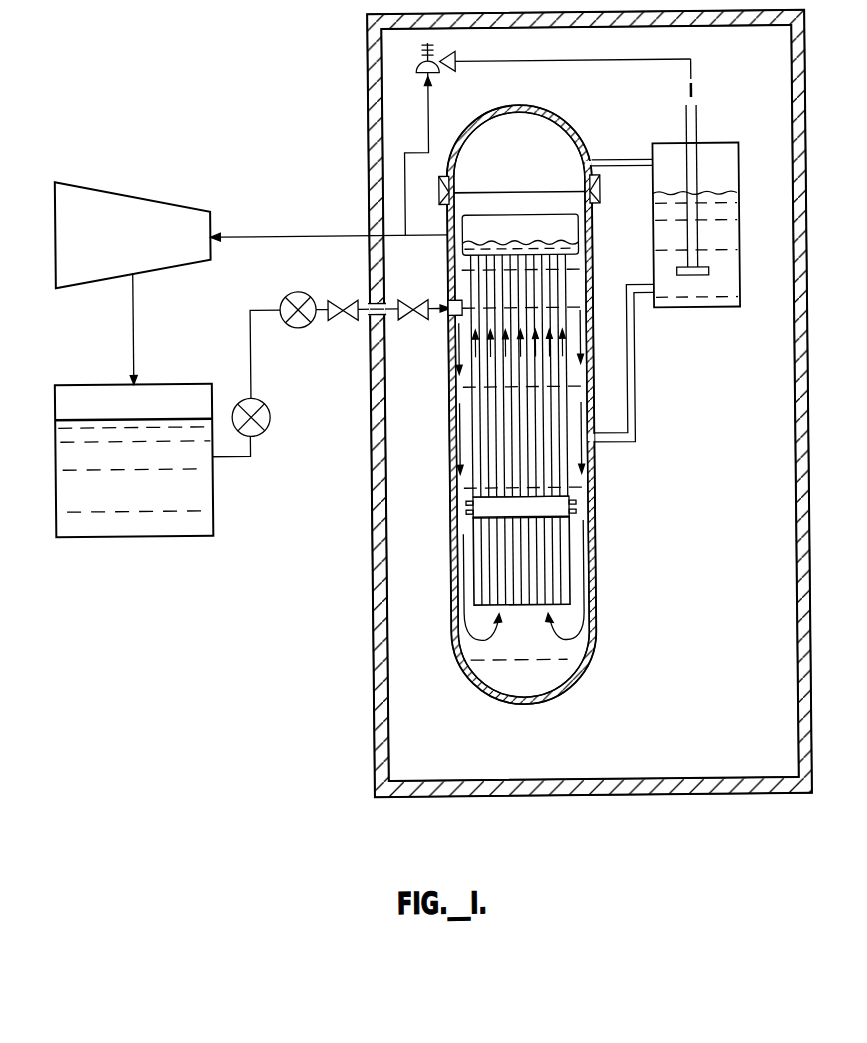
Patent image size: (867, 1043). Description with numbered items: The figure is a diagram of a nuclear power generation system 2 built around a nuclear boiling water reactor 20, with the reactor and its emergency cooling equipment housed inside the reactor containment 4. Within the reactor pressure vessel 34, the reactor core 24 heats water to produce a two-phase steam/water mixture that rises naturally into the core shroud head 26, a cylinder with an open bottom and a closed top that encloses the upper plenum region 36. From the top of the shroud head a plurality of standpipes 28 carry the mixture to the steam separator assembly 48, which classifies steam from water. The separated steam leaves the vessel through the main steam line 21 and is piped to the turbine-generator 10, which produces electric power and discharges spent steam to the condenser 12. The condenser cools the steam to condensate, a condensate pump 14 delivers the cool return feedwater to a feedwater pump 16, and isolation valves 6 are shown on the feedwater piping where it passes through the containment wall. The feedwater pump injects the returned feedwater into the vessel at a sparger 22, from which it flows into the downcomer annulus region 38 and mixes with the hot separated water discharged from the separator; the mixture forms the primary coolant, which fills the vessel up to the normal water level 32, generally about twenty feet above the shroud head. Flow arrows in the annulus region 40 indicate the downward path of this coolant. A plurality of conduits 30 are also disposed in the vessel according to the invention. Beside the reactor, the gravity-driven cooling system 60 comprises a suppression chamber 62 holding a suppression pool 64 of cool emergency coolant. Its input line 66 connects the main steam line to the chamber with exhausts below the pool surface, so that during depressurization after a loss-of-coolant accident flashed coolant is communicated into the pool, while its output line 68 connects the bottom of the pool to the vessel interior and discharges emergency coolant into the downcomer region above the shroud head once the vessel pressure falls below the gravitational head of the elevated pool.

The nuclear power generation system 2 is at (266, 698).
The reactor containment 4 is at (528, 796).
The isolation valve 6 is at (333, 295).
The turbine-generator 10 is at (172, 176).
The condenser 12 is at (165, 381).
The condensate pump 14 is at (270, 414).
The feedwater pump 16 is at (319, 277).
The nuclear boiling water reactor 20 is at (543, 107).
The main steam line 21 is at (543, 148).
The sparger 22 is at (451, 316).
The reactor core 24 is at (558, 572).
The core shroud head 26 is at (567, 490).
The standpipes 28 is at (567, 368).
The conduits 30 is at (576, 513).
The normal water level 32 is at (581, 243).
The reactor pressure vessel 34 is at (572, 683).
The upper plenum region 36 is at (485, 513).
The downcomer annulus region 38 is at (462, 437).
The downcomer annulus 40 is at (463, 380).
The steam separator assembly 48 is at (421, 139).
The gravity-driven cooling system 60 is at (603, 238).
The suppression chamber 62 is at (733, 142).
The suppression pool 64 is at (720, 231).
The input line 66 is at (536, 61).
The output line 68 is at (637, 411).